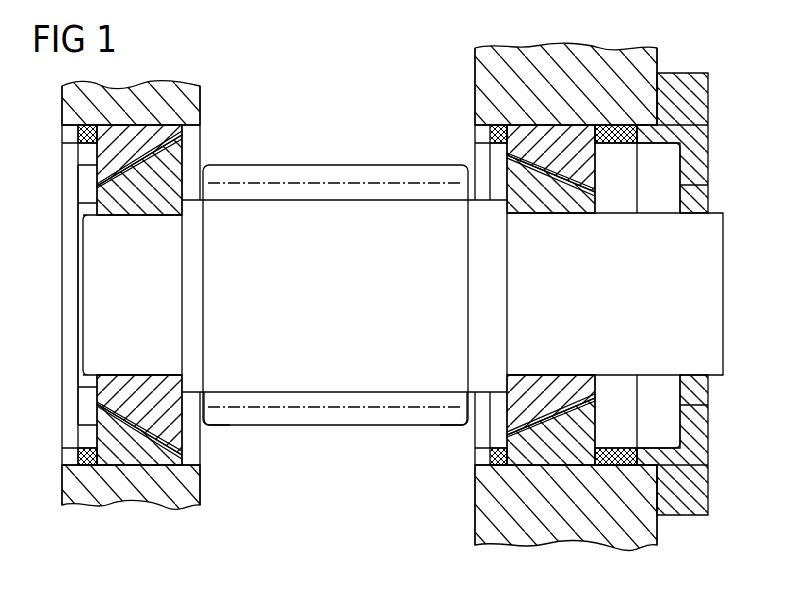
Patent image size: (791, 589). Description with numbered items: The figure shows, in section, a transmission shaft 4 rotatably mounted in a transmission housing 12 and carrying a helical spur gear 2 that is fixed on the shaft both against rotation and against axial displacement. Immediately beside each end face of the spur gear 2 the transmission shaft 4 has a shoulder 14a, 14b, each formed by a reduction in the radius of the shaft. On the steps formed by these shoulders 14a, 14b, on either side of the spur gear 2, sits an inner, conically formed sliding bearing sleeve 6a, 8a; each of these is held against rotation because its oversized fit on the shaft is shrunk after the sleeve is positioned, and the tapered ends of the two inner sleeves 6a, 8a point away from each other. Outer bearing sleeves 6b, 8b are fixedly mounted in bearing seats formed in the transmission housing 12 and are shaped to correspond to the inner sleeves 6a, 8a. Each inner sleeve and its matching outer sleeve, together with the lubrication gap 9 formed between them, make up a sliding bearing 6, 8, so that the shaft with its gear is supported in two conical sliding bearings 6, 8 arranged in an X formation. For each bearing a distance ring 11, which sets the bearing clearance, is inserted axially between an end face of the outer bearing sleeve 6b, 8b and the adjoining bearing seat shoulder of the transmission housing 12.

The helical spur gear 2 is at (325, 250).
The transmission shaft 4 is at (703, 300).
The sliding bearing 6 is at (98, 244).
The inner sliding bearing sleeve 6a is at (78, 204).
The outer bearing sleeve 6b is at (78, 162).
The sliding bearing 8 is at (577, 234).
The inner sliding bearing sleeve 8a is at (558, 213).
The outer bearing sleeve 8b is at (588, 160).
The lubrication gap 9 is at (185, 132).
The distance ring 11 is at (80, 130).
The transmission housing 12 is at (622, 58).
The shoulder 14a is at (203, 432).
The shoulder 14b is at (488, 402).